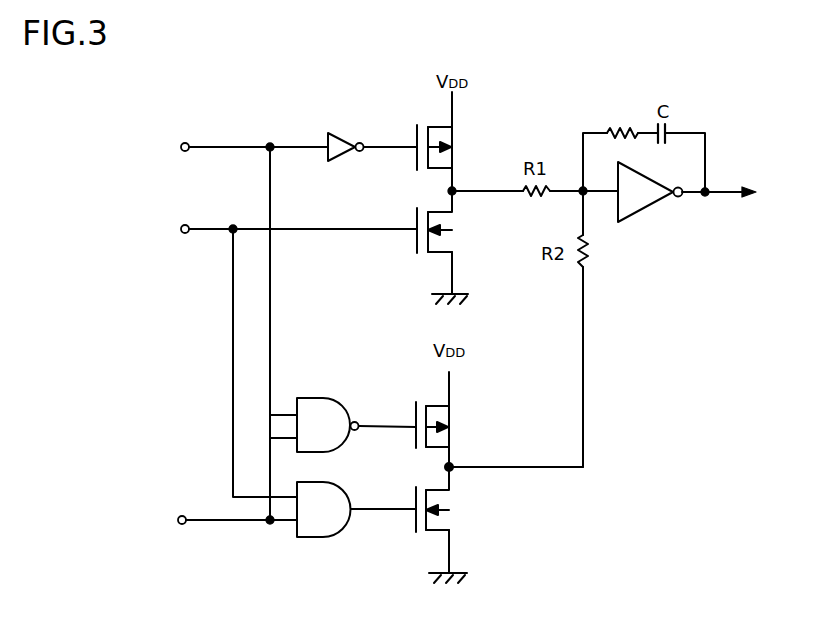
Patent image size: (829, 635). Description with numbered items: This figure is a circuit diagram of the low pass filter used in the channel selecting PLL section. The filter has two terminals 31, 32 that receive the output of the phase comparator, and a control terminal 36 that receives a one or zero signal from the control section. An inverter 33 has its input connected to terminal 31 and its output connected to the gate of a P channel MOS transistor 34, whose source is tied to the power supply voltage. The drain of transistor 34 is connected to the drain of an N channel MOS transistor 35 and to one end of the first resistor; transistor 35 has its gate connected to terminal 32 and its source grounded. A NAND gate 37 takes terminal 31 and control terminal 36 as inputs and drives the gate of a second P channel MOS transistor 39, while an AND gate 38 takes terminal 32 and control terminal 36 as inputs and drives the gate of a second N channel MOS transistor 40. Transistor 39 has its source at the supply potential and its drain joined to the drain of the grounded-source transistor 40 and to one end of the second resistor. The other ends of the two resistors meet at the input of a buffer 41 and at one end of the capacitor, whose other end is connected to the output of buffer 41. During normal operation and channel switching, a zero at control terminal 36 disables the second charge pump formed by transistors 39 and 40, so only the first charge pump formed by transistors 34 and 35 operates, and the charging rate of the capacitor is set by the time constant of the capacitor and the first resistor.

The terminal 31 is at (185, 142).
The terminal 32 is at (185, 224).
The inverter 33 is at (341, 130).
The P channel MOS transistor 34 is at (462, 138).
The N channel MOS transistor 35 is at (454, 220).
The control terminal 36 is at (182, 515).
The NAND gate 37 is at (333, 396).
The AND gate 38 is at (329, 539).
The P channel MOS transistor 39 is at (462, 413).
The N channel MOS transistor 40 is at (458, 526).
The buffer 41 is at (648, 208).